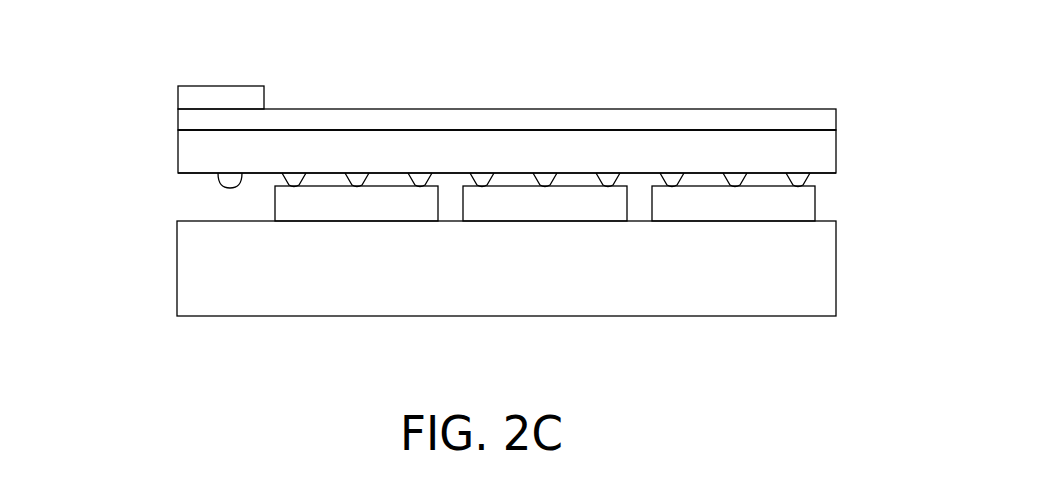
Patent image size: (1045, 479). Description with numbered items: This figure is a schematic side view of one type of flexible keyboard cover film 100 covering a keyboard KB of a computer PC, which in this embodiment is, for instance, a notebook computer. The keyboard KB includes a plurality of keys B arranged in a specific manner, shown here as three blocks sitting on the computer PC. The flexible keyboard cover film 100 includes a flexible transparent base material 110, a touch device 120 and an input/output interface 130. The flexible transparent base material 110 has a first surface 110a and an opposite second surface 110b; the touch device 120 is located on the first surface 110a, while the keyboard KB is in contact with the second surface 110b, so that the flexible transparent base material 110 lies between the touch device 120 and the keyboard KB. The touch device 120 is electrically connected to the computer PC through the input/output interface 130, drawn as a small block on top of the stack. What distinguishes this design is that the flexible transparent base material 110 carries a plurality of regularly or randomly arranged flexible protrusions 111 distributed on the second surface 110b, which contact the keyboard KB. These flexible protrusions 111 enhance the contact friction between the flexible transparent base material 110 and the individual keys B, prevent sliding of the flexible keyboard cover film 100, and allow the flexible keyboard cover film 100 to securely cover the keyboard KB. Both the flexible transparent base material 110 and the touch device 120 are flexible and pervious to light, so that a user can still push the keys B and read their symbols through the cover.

The flexible keyboard cover film 100 is at (477, 139).
The flexible transparent base material 110 is at (203, 150).
The first surface 110a is at (815, 130).
The second surface 110b is at (823, 173).
The flexible protrusions 111 is at (455, 197).
The touch device 120 is at (207, 120).
The input/output (I/O) interface 130 is at (200, 101).
The keys B is at (740, 270).
The keyboard KB is at (545, 251).
The computer PC is at (243, 297).